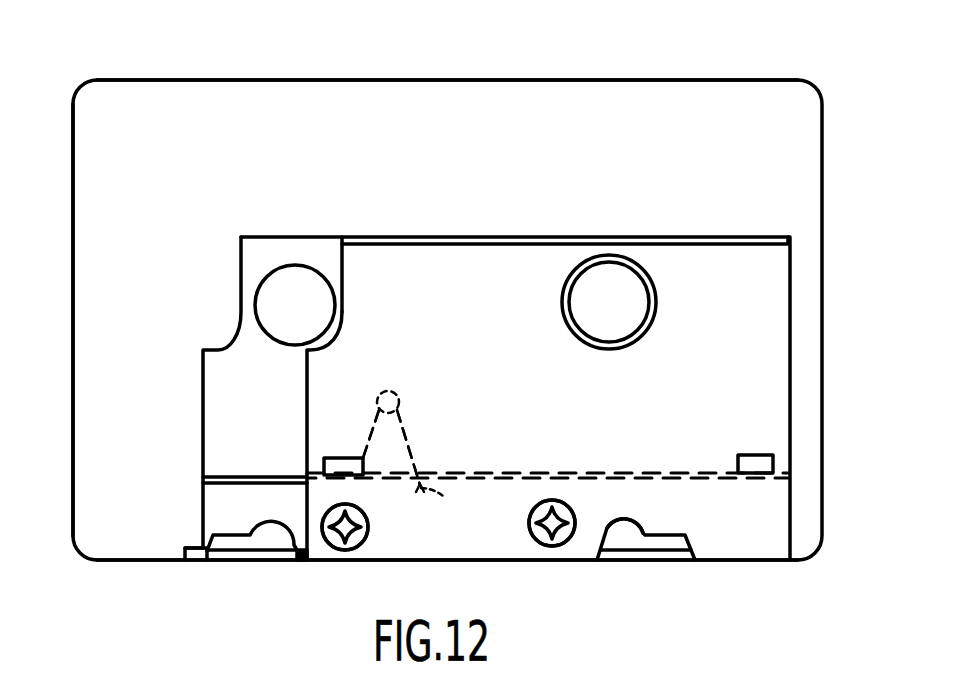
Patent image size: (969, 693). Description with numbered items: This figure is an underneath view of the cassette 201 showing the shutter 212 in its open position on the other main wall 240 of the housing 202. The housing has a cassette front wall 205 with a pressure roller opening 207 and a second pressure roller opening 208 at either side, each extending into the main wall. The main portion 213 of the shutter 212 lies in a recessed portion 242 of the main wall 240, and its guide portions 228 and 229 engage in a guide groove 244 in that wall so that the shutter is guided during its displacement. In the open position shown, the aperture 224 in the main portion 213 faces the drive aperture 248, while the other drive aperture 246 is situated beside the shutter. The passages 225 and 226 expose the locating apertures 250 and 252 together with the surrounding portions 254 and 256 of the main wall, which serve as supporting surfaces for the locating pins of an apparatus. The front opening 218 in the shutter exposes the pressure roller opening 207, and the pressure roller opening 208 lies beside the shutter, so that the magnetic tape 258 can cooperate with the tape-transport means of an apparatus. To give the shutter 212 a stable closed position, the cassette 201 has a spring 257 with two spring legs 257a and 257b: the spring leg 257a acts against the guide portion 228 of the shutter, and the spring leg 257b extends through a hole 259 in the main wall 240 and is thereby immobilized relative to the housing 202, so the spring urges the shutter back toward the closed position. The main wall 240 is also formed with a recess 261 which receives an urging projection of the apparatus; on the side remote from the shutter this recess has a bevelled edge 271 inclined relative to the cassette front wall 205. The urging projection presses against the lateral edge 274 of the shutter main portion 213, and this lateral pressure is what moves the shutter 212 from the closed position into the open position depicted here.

The cassette 201 is at (823, 319).
The housing 202 is at (73, 352).
The cassette front wall 205 is at (107, 562).
The pressure roller opening 207 is at (623, 543).
The pressure roller opening 208 is at (263, 542).
The shutter 212 is at (341, 258).
The main portion 213 is at (695, 268).
The front opening 218 is at (641, 523).
The aperture 224 is at (572, 320).
The passage 225 is at (536, 537).
The passage 226 is at (366, 536).
The guide portion 228 is at (333, 478).
The guide portion 229 is at (758, 473).
The main wall 240 is at (228, 100).
The recessed portion 242 is at (220, 393).
The guide groove 244 is at (260, 475).
The drive aperture 246 is at (283, 280).
The drive aperture 248 is at (607, 277).
The locating aperture 250 is at (357, 512).
The locating aperture 252 is at (543, 512).
The supporting surface portion 254 is at (338, 540).
The supporting surface portion 256 is at (566, 512).
The spring 257 is at (390, 393).
The spring leg 257a is at (368, 443).
The spring leg 257b is at (419, 452).
The magnetic tape 258 is at (658, 550).
The hole 259 is at (448, 501).
The recess 261 is at (193, 562).
The bevelled edge 271 is at (195, 554).
The lateral edge 274 is at (303, 561).